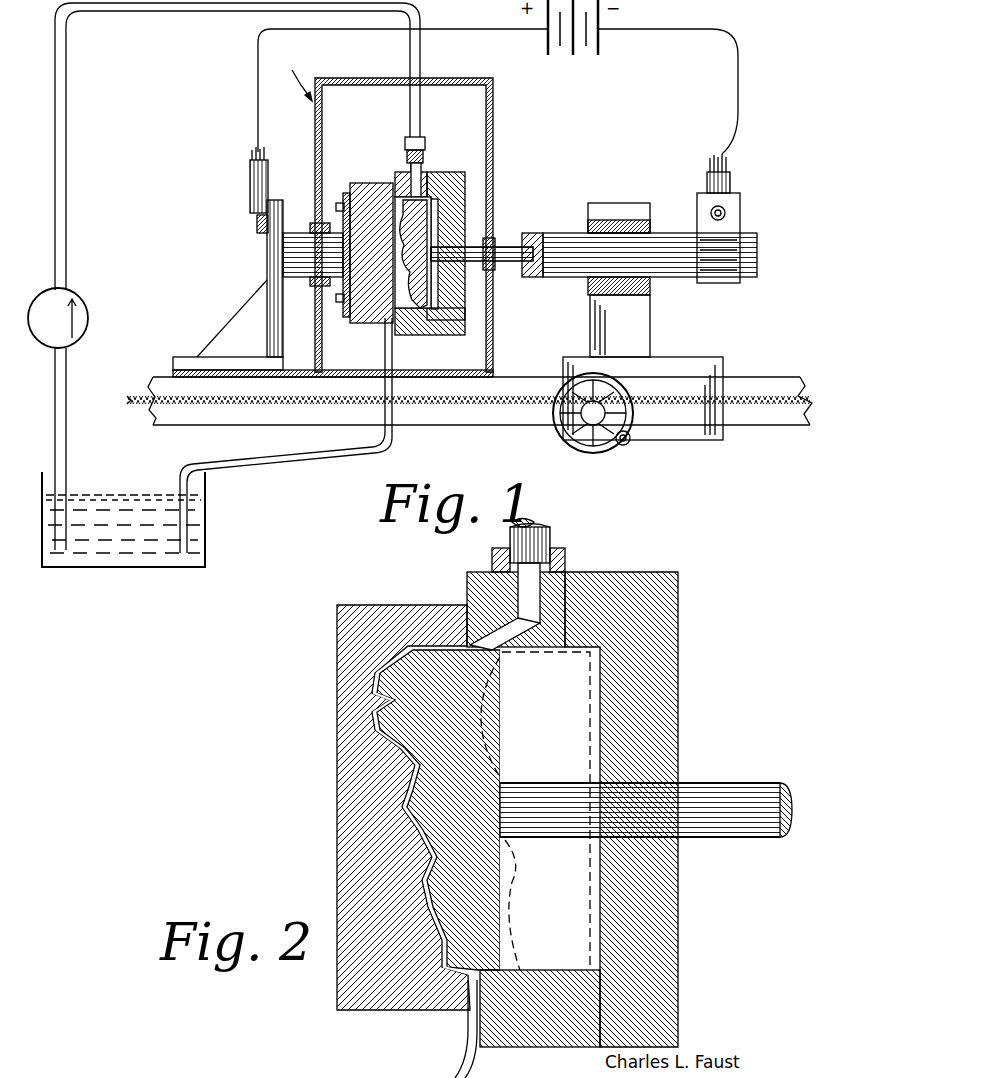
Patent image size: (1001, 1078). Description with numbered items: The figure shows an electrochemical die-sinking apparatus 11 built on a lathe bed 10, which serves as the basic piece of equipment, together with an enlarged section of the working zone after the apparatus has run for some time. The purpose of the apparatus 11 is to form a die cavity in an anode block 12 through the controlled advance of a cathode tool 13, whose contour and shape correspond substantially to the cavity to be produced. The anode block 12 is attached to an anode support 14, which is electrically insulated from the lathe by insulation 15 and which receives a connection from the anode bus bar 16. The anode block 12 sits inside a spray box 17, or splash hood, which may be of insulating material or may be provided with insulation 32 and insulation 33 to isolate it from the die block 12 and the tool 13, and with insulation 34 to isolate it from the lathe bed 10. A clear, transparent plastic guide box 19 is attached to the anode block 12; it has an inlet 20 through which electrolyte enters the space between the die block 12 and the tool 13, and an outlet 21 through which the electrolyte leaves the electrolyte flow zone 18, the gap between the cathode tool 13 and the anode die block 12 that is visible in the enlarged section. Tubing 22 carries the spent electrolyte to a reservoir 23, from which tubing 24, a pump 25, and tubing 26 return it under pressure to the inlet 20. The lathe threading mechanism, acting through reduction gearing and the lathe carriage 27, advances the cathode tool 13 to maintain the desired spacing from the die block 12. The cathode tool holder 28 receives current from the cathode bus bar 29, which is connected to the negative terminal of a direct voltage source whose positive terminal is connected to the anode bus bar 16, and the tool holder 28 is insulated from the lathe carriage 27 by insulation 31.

In FIG. 1, the lathe bed 10 is at (773, 422).
In FIG. 1, the electrochemical die-sinking apparatus 11 is at (293, 77).
In FIG. 1, the anode block 12 is at (372, 183).
In FIG. 2, the anode block 12 is at (385, 605).
In FIG. 1, the cathode tool 13 is at (422, 288).
In FIG. 2, the cathode tool 13 is at (503, 700).
In FIG. 1, the anode support 14 is at (228, 336).
In FIG. 1, the insulation 15 is at (173, 366).
In FIG. 1, the anode bus bar 16 is at (250, 163).
In FIG. 1, the spray box 17 is at (495, 135).
In FIG. 2, the electrolyte flow zone 18 is at (385, 812).
In FIG. 1, the guide box 19 is at (440, 172).
In FIG. 2, the guide box 19 is at (680, 595).
In FIG. 1, the inlet 20 is at (394, 183).
In FIG. 2, the inlet 20 is at (467, 615).
In FIG. 1, the outlet 21 is at (386, 330).
In FIG. 2, the outlet 21 is at (470, 985).
In FIG. 1, the tubing 22 is at (265, 463).
In FIG. 2, the tubing 22 is at (458, 1072).
In FIG. 1, the reservoir 23 is at (121, 495).
In FIG. 1, the tubing 24 is at (67, 433).
In FIG. 1, the pump 25 is at (88, 312).
In FIG. 1, the tubing 26 is at (68, 218).
In FIG. 2, the tubing 26 is at (552, 536).
In FIG. 1, the lathe carriage 27 is at (658, 432).
In FIG. 1, the cathode tool holder 28 is at (760, 242).
In FIG. 1, the cathode bus bar 29 is at (733, 163).
In FIG. 1, the insulation 31 is at (650, 228).
In FIG. 1, the insulation 32 is at (312, 222).
In FIG. 1, the insulation 33 is at (497, 240).
In FIG. 1, the insulation 34 is at (497, 370).